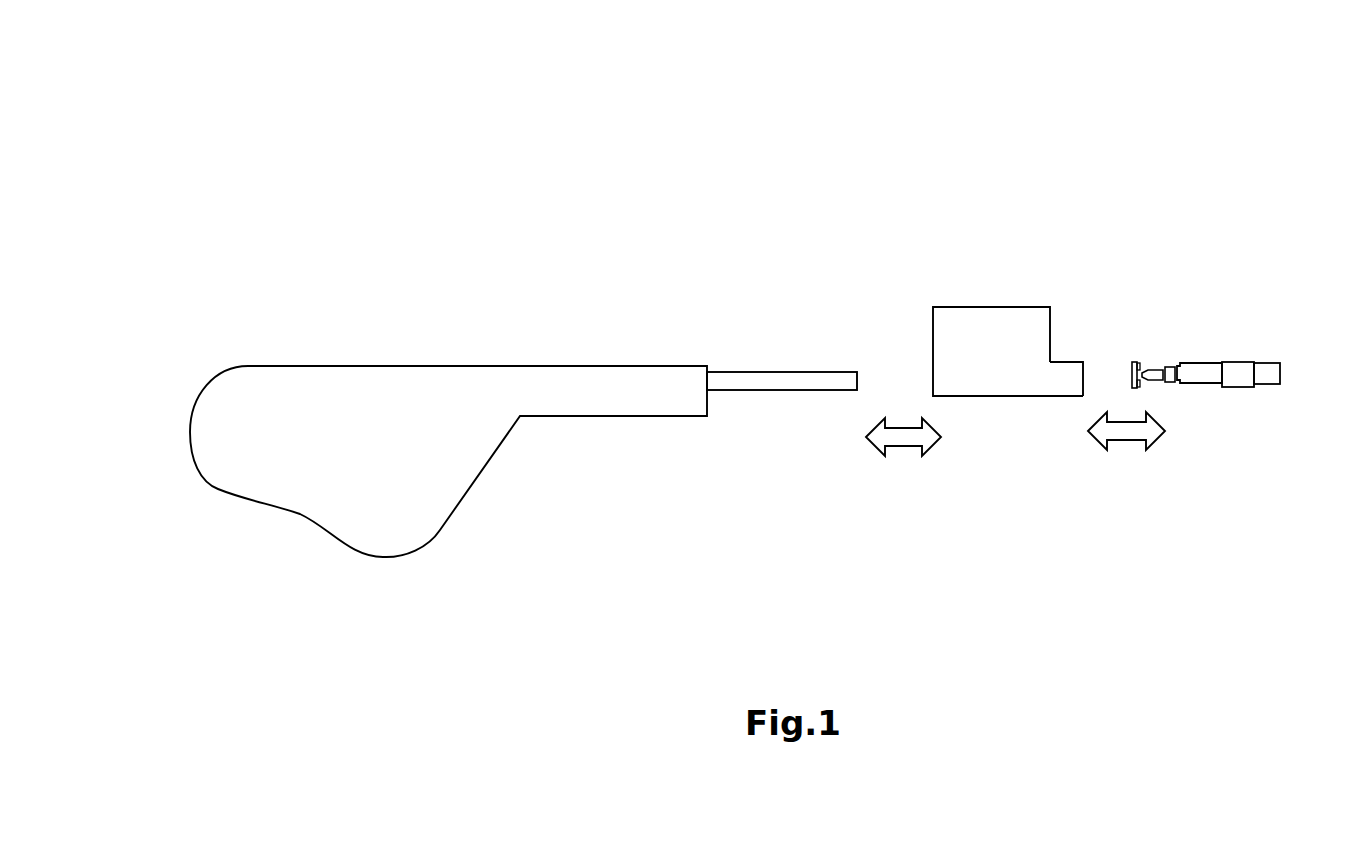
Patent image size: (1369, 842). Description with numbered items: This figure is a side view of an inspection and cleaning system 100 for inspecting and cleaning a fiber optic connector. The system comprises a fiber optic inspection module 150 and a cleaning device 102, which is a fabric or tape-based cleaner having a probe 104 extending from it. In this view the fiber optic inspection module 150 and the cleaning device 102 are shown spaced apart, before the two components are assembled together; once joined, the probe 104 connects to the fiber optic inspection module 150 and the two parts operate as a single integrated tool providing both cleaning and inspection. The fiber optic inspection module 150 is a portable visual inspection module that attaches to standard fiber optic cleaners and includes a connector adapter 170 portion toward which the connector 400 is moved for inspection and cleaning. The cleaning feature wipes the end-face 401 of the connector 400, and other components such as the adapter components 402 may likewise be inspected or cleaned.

The inspection and cleaning system 100 is at (990, 158).
The cleaning device 102 is at (486, 346).
The probe 104 is at (783, 390).
The fiber optic inspection module 150 is at (999, 288).
The connector adapter 170 is at (1068, 387).
The connector 400 is at (1211, 364).
The end-face 401 is at (1142, 378).
The adapter components 402 is at (1132, 360).